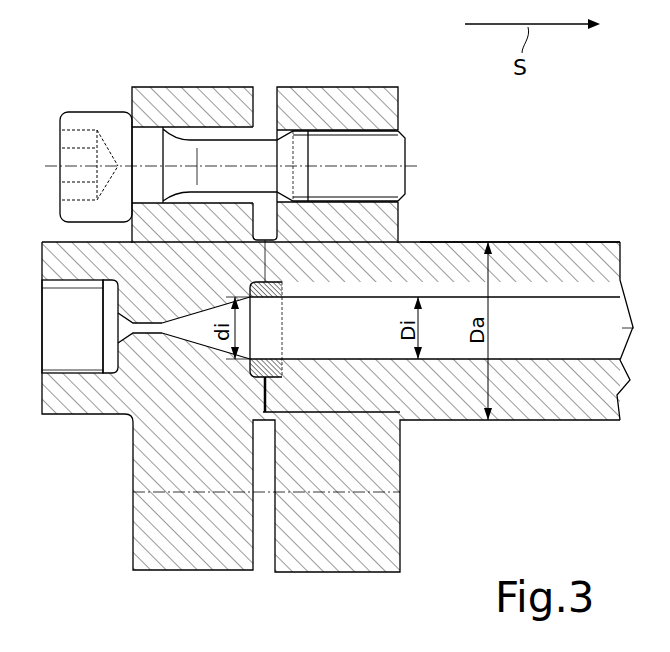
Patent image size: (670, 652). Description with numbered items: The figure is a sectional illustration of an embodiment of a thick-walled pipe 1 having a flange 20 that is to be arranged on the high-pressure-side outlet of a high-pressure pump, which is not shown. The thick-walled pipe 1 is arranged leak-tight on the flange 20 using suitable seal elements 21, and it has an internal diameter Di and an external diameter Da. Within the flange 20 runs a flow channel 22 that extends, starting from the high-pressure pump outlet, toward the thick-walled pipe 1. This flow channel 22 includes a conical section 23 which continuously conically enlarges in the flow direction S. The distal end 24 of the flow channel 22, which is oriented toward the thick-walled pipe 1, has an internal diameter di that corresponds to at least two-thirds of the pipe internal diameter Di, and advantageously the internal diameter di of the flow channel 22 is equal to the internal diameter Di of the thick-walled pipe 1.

The thick-walled pipe 1 is at (552, 250).
The flange 20 is at (203, 88).
The seal elements 21 is at (283, 376).
The flow channel 22 is at (145, 337).
The conical section 23 is at (215, 345).
The distal end 24 is at (250, 358).